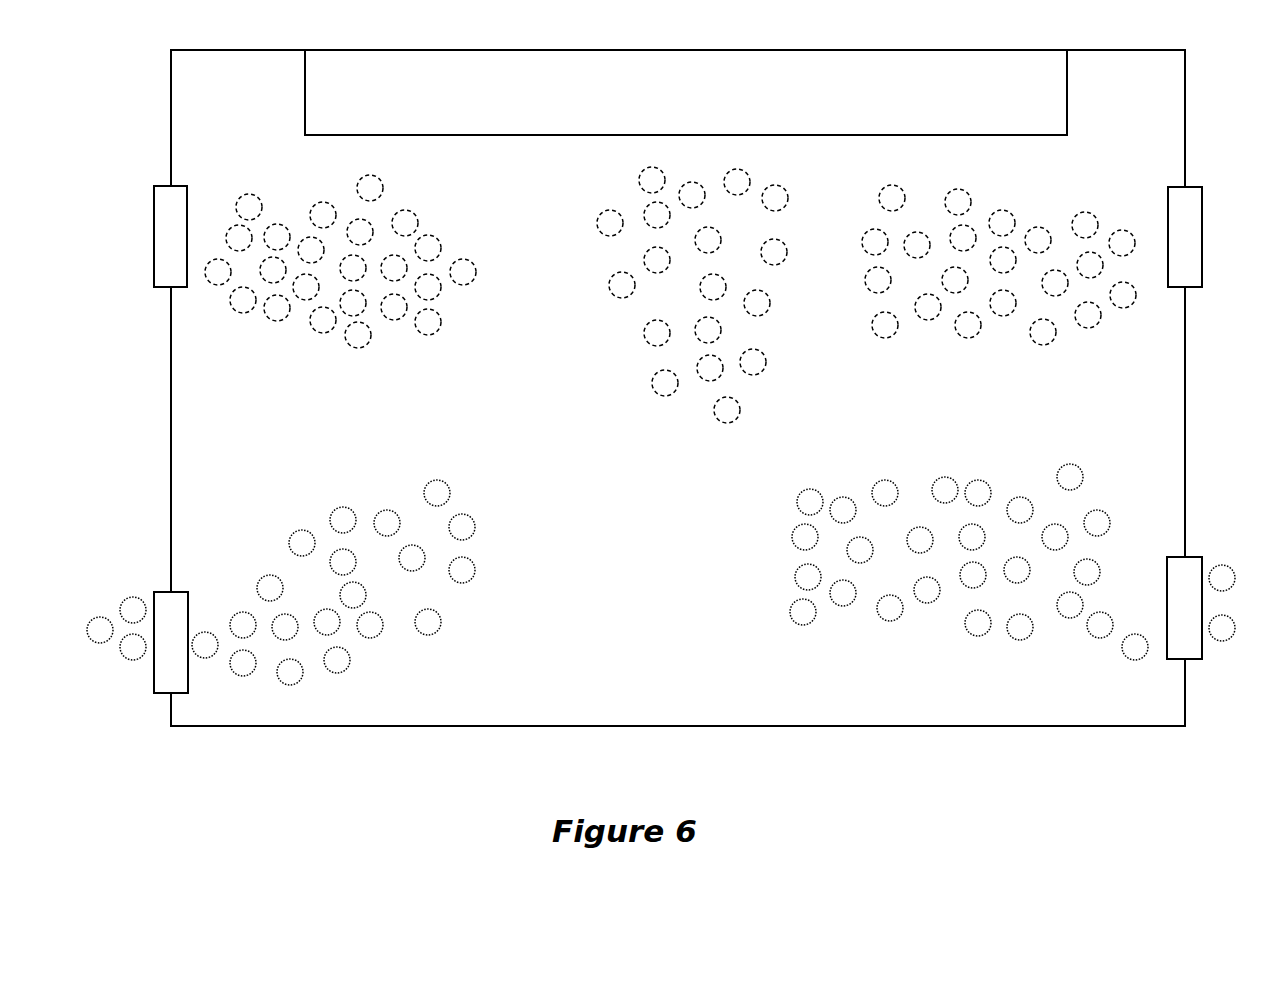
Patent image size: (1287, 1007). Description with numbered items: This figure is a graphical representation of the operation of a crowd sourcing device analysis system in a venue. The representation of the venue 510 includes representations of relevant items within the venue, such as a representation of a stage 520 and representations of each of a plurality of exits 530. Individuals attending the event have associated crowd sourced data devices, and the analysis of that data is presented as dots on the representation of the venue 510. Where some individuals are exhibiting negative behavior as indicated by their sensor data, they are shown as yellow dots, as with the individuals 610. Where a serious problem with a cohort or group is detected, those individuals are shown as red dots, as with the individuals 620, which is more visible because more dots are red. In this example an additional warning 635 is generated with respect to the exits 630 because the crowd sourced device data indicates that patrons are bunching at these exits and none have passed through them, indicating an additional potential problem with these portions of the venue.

The venue 510 is at (695, 715).
The stage 520 is at (705, 123).
The exits 530 is at (1167, 607).
The individuals 610 is at (763, 398).
The individuals 620 is at (403, 657).
The exits 630 is at (1168, 237).
The additional warning 635 is at (407, 357).